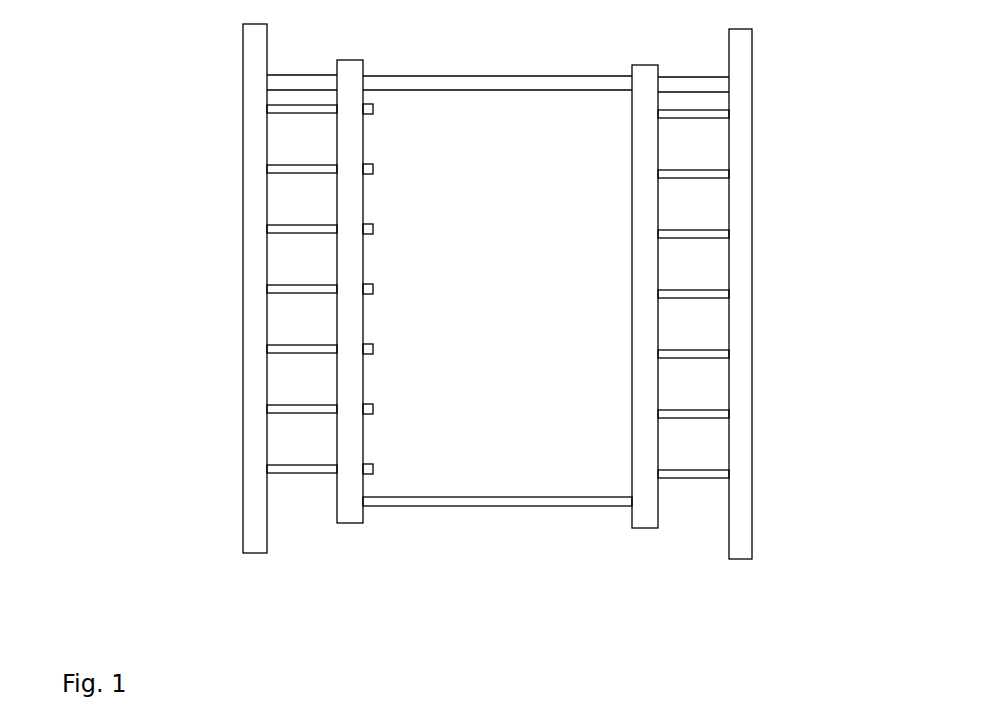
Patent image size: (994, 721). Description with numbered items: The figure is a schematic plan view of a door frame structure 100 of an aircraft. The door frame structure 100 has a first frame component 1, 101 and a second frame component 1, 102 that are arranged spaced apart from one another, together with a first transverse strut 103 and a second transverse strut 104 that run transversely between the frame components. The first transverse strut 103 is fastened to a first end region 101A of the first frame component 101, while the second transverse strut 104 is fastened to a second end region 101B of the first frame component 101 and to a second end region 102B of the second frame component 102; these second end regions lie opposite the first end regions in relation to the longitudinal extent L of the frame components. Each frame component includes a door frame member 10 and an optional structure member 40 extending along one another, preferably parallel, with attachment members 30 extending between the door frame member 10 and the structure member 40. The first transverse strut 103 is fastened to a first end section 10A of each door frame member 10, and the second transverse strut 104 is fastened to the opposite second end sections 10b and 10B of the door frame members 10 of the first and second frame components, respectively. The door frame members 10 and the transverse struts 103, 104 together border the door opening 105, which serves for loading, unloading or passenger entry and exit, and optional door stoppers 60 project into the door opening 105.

The frame component 1 is at (514, 604).
The door frame member 10 is at (352, 523).
The first end section of door frame member 10A is at (356, 72).
The second end section of door frame member 10B is at (375, 523).
The second end section of door frame member 10b is at (363, 440).
The attachment member 30 is at (712, 115).
The structure member 40 is at (247, 553).
The door stopper 60 is at (376, 109).
The door frame structure 100 is at (809, 82).
The first frame component 101 is at (683, 565).
The first end region of first frame component 101A is at (186, 88).
The second end region of first frame component 101B is at (795, 22).
The second frame component 102 is at (292, 570).
The second end region of second frame component 102B is at (194, 491).
The first transverse strut 103 is at (524, 80).
The second transverse strut 104 is at (515, 506).
The door opening 105 is at (555, 328).
The longitudinal extent L is at (168, 240).